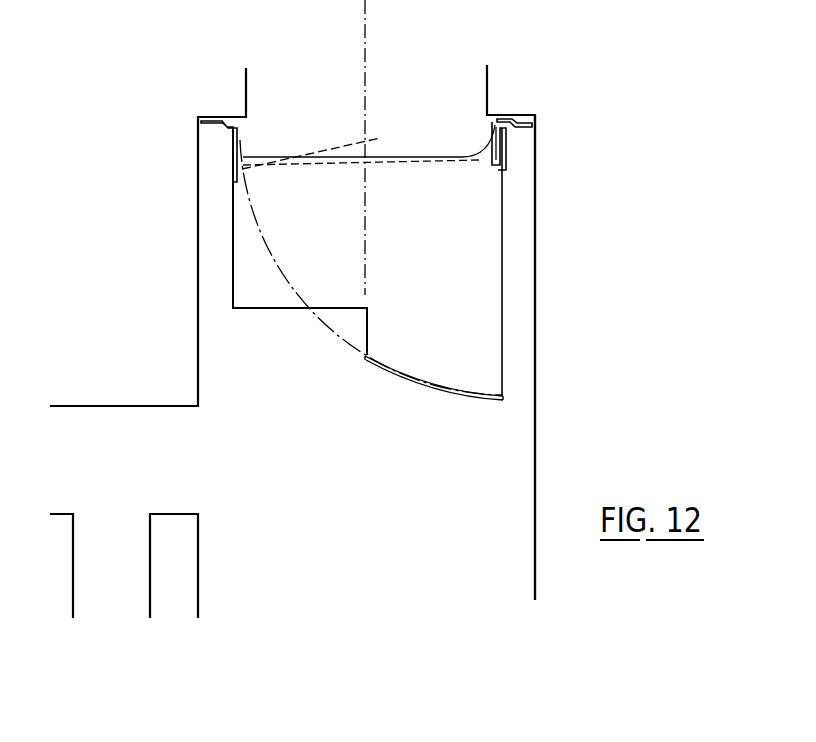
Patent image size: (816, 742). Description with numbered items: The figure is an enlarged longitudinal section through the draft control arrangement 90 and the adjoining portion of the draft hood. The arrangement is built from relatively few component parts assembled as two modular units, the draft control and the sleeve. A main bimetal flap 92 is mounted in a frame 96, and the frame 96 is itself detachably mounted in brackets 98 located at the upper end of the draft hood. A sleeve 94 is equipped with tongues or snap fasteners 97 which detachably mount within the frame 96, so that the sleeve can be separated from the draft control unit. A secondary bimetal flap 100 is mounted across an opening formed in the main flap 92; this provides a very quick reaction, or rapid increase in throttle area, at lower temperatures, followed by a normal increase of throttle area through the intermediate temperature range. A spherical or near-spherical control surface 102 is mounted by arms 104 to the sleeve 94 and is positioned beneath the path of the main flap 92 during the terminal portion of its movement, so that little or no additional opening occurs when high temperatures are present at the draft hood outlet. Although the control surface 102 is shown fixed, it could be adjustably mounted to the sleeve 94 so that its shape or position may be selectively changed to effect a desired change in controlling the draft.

The draft control arrangement 90 is at (555, 222).
The main bimetal flap 92 is at (266, 157).
The sleeve 94 is at (503, 206).
The frame 96 is at (486, 121).
The tongues or snap fasteners 97 is at (503, 160).
The brackets 98 is at (512, 131).
The secondary bimetal flap 100 is at (380, 145).
The control surface 102 is at (418, 385).
The arms 104 is at (495, 347).